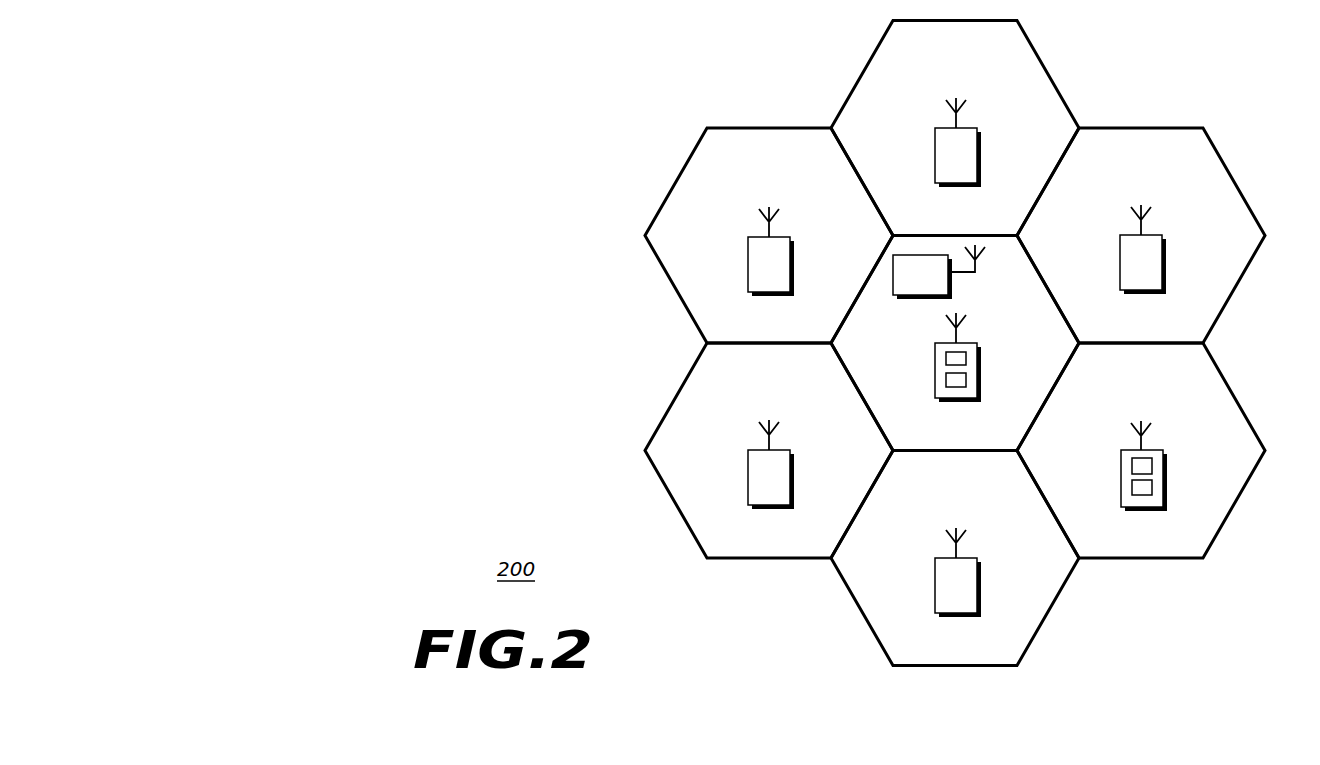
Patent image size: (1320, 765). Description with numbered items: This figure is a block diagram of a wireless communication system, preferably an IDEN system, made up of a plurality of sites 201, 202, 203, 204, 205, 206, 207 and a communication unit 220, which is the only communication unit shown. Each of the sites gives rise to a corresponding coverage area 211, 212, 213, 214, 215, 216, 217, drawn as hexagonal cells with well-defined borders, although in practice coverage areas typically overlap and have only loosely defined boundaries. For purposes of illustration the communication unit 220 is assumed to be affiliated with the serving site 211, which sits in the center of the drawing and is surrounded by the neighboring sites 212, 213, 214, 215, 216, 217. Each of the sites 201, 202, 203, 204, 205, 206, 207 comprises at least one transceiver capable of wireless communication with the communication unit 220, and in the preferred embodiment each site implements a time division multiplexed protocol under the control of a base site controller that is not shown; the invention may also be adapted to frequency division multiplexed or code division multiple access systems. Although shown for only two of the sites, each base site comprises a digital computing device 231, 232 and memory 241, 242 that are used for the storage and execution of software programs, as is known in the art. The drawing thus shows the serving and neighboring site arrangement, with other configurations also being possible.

The site 201 is at (964, 376).
The site 202 is at (934, 166).
The site 203 is at (1167, 266).
The site 204 is at (1146, 482).
The site 205 is at (934, 601).
The site 206 is at (747, 490).
The site 207 is at (747, 272).
The coverage area 211 is at (1020, 272).
The coverage area 212 is at (1018, 67).
The coverage area 213 is at (1205, 172).
The coverage area 214 is at (1205, 392).
The coverage area 215 is at (885, 620).
The coverage area 216 is at (690, 500).
The coverage area 217 is at (688, 280).
The communication unit 220 is at (919, 301).
The digital computing device 231 is at (960, 389).
The digital computing device 232 is at (1143, 496).
The memory 241 is at (966, 359).
The memory 242 is at (1152, 463).